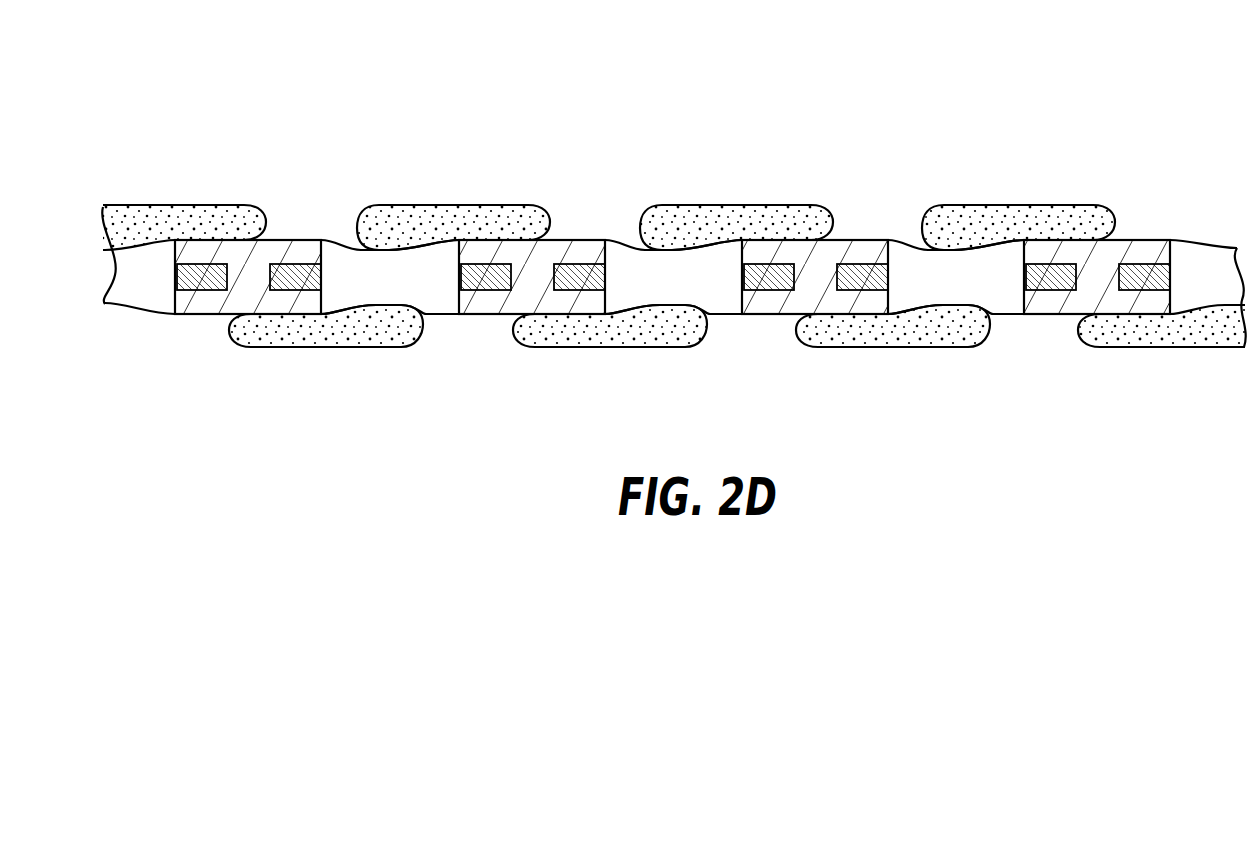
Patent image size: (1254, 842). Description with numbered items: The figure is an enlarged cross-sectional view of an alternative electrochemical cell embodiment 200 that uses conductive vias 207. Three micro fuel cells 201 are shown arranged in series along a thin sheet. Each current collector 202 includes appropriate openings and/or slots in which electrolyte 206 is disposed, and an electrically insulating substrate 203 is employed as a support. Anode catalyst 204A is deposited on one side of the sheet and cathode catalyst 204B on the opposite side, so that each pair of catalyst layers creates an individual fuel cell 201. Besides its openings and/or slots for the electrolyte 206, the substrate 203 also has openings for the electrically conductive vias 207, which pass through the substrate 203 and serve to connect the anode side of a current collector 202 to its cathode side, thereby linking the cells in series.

The electrochemical cell embodiment 200 is at (1123, 52).
The micro fuel cell 201 is at (349, 152).
The current collector 202 is at (272, 250).
The electrically insulating substrate 203 is at (323, 277).
The anode catalyst 204A is at (178, 206).
The cathode catalyst 204B is at (323, 348).
The electrolyte 206 is at (422, 293).
The conductive via 207 is at (252, 283).